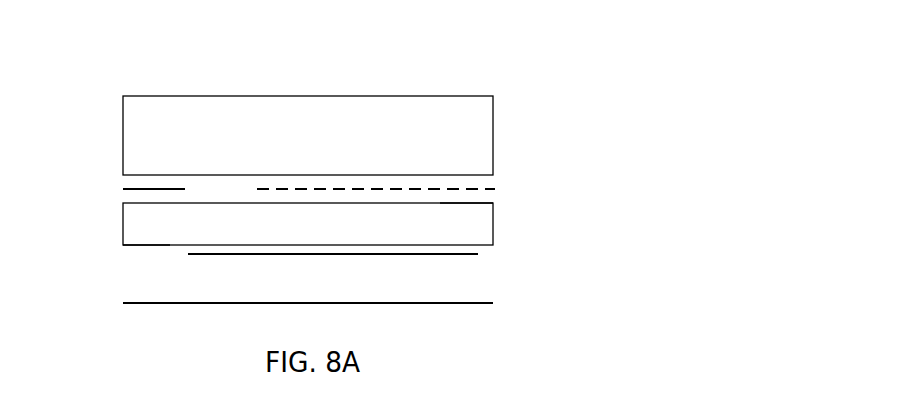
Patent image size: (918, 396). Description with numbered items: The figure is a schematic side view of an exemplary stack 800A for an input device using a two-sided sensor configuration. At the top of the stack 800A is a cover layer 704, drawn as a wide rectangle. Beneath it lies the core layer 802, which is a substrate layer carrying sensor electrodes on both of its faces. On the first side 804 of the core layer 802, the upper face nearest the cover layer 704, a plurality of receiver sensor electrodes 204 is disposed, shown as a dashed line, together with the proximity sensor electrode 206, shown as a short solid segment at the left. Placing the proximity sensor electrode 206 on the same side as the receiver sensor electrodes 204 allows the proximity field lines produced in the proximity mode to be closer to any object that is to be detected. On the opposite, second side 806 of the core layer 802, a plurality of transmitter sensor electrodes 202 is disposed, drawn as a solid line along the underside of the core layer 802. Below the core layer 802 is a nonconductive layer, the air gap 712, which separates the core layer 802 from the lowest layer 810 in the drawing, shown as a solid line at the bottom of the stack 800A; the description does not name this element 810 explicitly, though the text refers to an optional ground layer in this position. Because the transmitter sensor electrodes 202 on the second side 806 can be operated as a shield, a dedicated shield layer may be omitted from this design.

The stack 800A is at (314, 191).
The cover layer 704 is at (323, 146).
The receiver sensor electrodes 204 is at (505, 183).
The proximity sensor electrode 206 is at (128, 192).
The first side 804 is at (475, 203).
The core layer 802 is at (323, 232).
The second side 806 is at (142, 245).
The air gap 712 is at (323, 282).
The transmitter sensor electrodes 202 is at (480, 260).
The display layer 810 is at (481, 308).